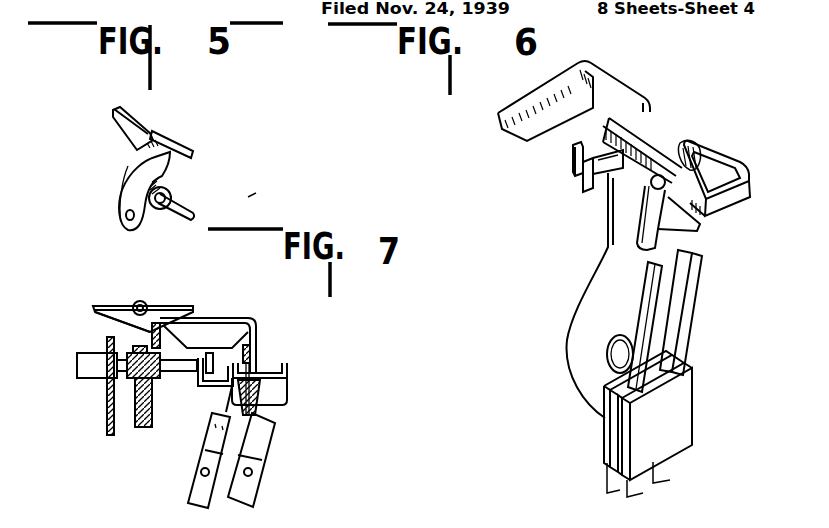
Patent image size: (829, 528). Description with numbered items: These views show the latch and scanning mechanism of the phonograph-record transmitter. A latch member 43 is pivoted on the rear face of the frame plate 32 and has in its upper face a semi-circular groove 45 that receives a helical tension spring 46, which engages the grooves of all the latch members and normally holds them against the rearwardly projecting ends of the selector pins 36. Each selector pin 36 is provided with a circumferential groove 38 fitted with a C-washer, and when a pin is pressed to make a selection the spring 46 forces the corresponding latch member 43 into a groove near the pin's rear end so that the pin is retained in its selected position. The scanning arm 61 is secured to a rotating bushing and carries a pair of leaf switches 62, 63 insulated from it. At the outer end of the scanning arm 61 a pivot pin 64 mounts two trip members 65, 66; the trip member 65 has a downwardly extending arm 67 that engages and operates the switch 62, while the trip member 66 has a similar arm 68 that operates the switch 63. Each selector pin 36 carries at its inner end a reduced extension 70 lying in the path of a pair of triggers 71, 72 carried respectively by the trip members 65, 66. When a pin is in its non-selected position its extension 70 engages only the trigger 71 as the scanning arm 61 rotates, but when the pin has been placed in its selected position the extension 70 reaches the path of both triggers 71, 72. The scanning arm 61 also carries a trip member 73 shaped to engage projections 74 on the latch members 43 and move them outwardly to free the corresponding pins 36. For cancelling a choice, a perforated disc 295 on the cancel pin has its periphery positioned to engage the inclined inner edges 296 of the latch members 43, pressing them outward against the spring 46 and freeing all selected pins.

In FIG. 7, the frame plate 32 is at (140, 426).
In FIG. 5, the selector pin 36 is at (172, 193).
In FIG. 7, the selector pin 36 is at (82, 372).
In FIG. 7, the circumferential groove 38 is at (107, 405).
In FIG. 5, the latch member 43 is at (133, 192).
In FIG. 7, the latch member 43 is at (110, 305).
In FIG. 5, the semi-circular groove 45 is at (152, 133).
In FIG. 7, the helical tension spring 46 is at (150, 304).
In FIG. 7, the scanning arm 61 is at (252, 354).
In FIG. 6, the scanning arm 61 is at (600, 300).
In FIG. 7, the leaf switch 62 is at (193, 482).
In FIG. 6, the leaf switch 62 is at (655, 350).
In FIG. 7, the leaf switch 63 is at (258, 483).
In FIG. 6, the leaf switch 63 is at (692, 296).
In FIG. 6, the pivot pin 64 is at (645, 192).
In FIG. 7, the trip member 65 is at (290, 392).
In FIG. 6, the trip member 65 is at (730, 200).
In FIG. 7, the trip member 66 is at (290, 364).
In FIG. 6, the trip member 66 is at (752, 170).
In FIG. 7, the downwardly extending arm 67 is at (236, 400).
In FIG. 6, the downwardly extending arm 67 is at (650, 228).
In FIG. 7, the arm 68 is at (262, 407).
In FIG. 6, the arm 68 is at (700, 232).
In FIG. 5, the reduced extension 70 is at (194, 215).
In FIG. 7, the reduced extension 70 is at (181, 372).
In FIG. 7, the trigger 71 is at (201, 382).
In FIG. 6, the trigger 71 is at (583, 182).
In FIG. 7, the trigger 72 is at (214, 355).
In FIG. 6, the trigger 72 is at (572, 158).
In FIG. 7, the trip member 73 is at (232, 320).
In FIG. 6, the trip member 73 is at (550, 82).
In FIG. 5, the projection 74 is at (194, 153).
In FIG. 7, the disc 295 is at (103, 347).
In FIG. 5, the inclined inner edge 296 is at (120, 128).
In FIG. 7, the inclined inner edge 296 is at (105, 315).